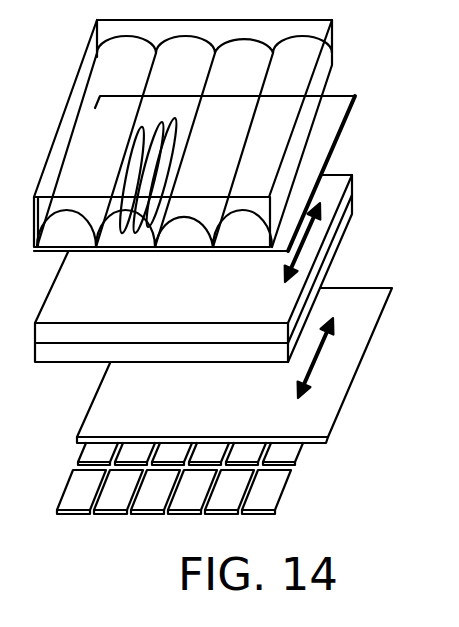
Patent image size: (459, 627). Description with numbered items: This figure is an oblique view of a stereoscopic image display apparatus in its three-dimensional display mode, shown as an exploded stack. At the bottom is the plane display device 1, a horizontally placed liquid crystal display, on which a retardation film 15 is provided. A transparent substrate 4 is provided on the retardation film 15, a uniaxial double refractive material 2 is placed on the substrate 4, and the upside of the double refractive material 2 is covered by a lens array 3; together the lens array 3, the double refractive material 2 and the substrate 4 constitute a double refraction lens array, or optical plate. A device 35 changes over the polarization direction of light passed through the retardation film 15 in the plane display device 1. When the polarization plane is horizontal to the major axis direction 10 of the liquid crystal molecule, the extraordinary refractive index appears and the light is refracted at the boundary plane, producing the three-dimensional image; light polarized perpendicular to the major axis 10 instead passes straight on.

The plane display device 1 is at (268, 490).
The uniaxial double refractive material 2 is at (336, 30).
The lens array 3 is at (130, 163).
The transparent substrate 4 is at (320, 153).
The major axis direction of the liquid crystal molecule 10 is at (312, 236).
The retardation film 15 is at (318, 421).
The device which changes over the polarization direction 35 is at (262, 332).